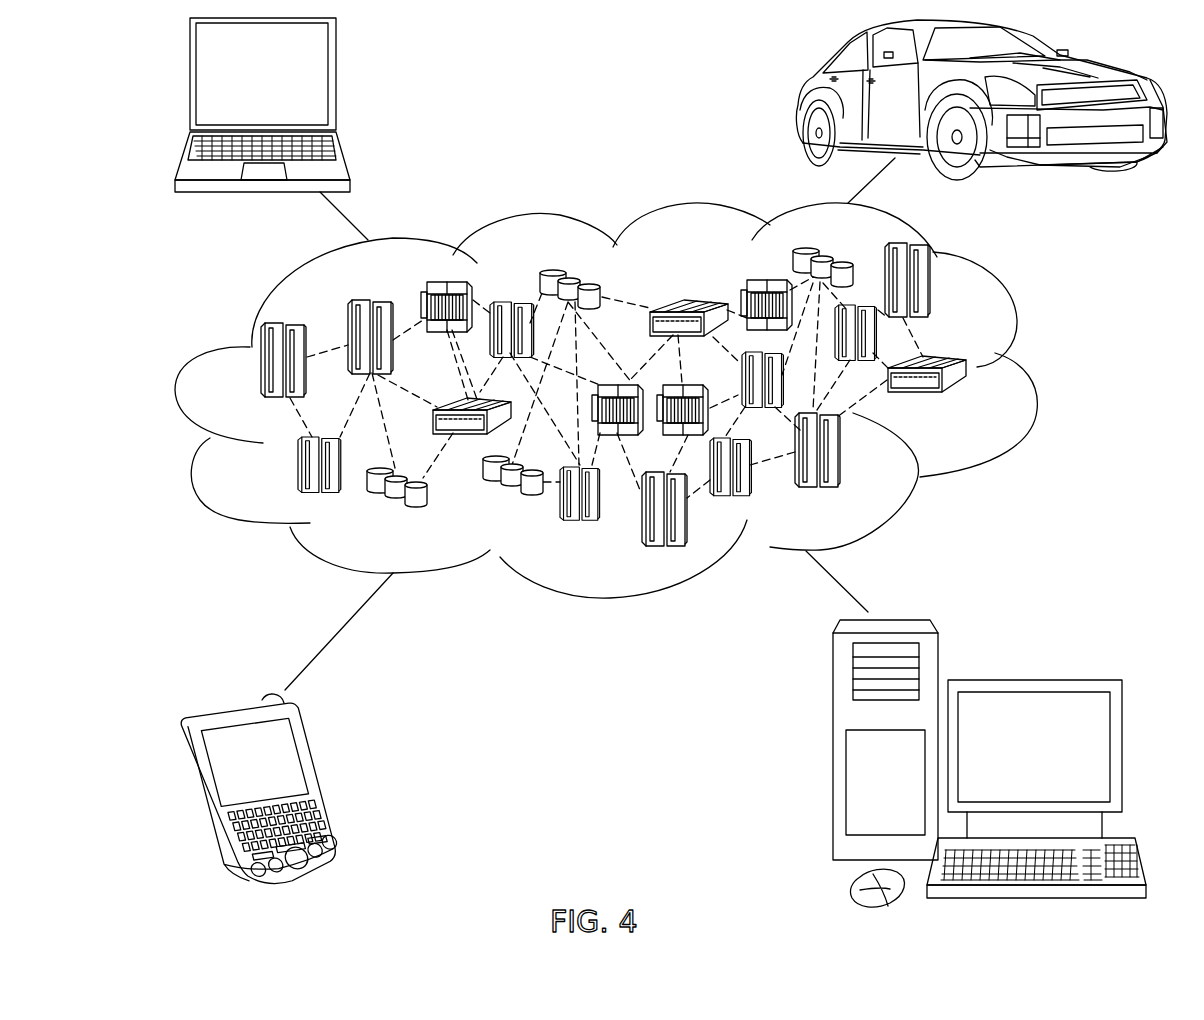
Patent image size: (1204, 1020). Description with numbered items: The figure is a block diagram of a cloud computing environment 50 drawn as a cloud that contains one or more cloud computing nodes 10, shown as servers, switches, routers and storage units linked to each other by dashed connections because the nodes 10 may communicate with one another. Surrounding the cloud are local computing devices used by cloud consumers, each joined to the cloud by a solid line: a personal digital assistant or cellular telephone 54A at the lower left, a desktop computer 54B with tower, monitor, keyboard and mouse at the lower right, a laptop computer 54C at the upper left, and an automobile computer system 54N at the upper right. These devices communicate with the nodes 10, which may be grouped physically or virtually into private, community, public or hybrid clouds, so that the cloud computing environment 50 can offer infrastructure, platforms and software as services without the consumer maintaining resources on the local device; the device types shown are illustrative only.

The cloud computing nodes 10 is at (968, 404).
The cloud computing environment 50 is at (1033, 372).
The personal digital assistant or cellular telephone 54A is at (323, 777).
The desktop computer 54B is at (1032, 680).
The laptop computer 54C is at (336, 81).
The automobile computer system 54N is at (800, 99).